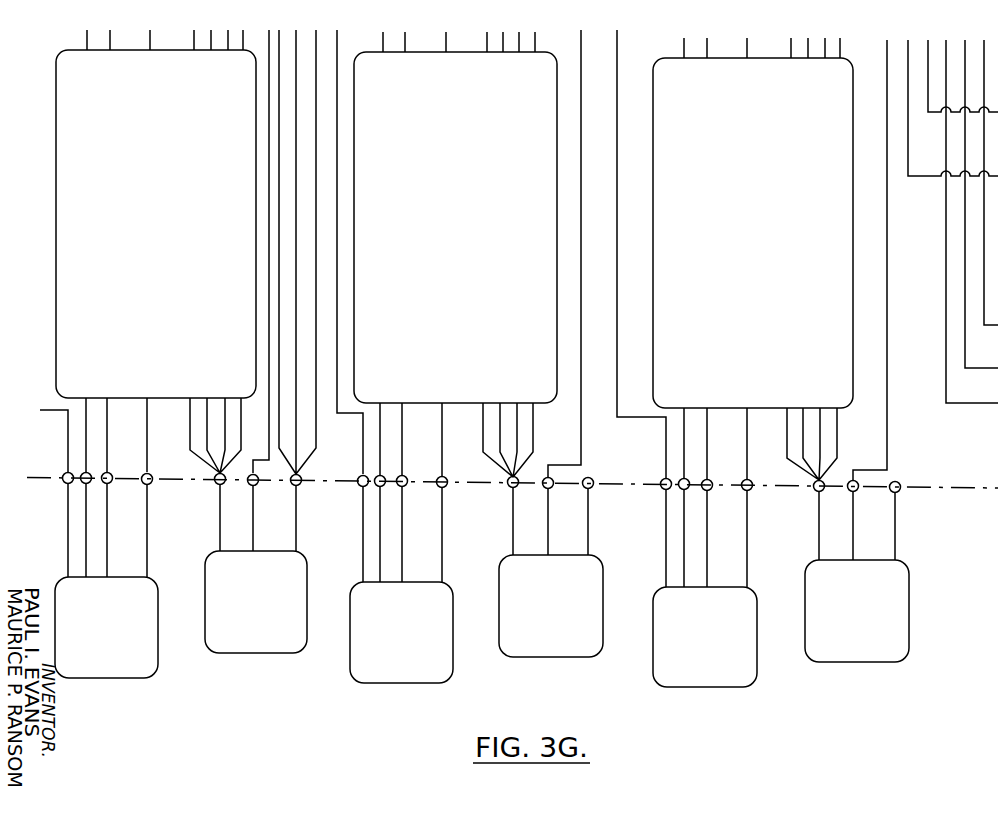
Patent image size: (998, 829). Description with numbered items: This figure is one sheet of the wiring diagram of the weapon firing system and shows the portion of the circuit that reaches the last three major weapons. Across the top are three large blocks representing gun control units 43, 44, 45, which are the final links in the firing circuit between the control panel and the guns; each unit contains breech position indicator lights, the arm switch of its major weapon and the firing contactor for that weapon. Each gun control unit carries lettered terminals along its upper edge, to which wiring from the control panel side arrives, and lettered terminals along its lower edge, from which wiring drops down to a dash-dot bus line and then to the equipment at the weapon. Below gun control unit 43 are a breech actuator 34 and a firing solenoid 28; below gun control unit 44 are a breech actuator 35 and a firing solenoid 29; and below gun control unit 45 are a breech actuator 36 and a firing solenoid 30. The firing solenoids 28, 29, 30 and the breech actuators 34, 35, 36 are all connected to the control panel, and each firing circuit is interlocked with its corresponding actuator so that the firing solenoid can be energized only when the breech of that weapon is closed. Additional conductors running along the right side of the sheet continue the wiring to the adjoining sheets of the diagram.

The gun control unit 43 is at (65, 62).
The gun control unit 44 is at (369, 67).
The gun control unit 45 is at (669, 72).
The breech actuator 34 is at (128, 665).
The firing solenoid 28 is at (258, 642).
The breech actuator 35 is at (397, 672).
The firing solenoid 29 is at (563, 648).
The breech actuator 36 is at (703, 678).
The firing solenoid 30 is at (872, 651).